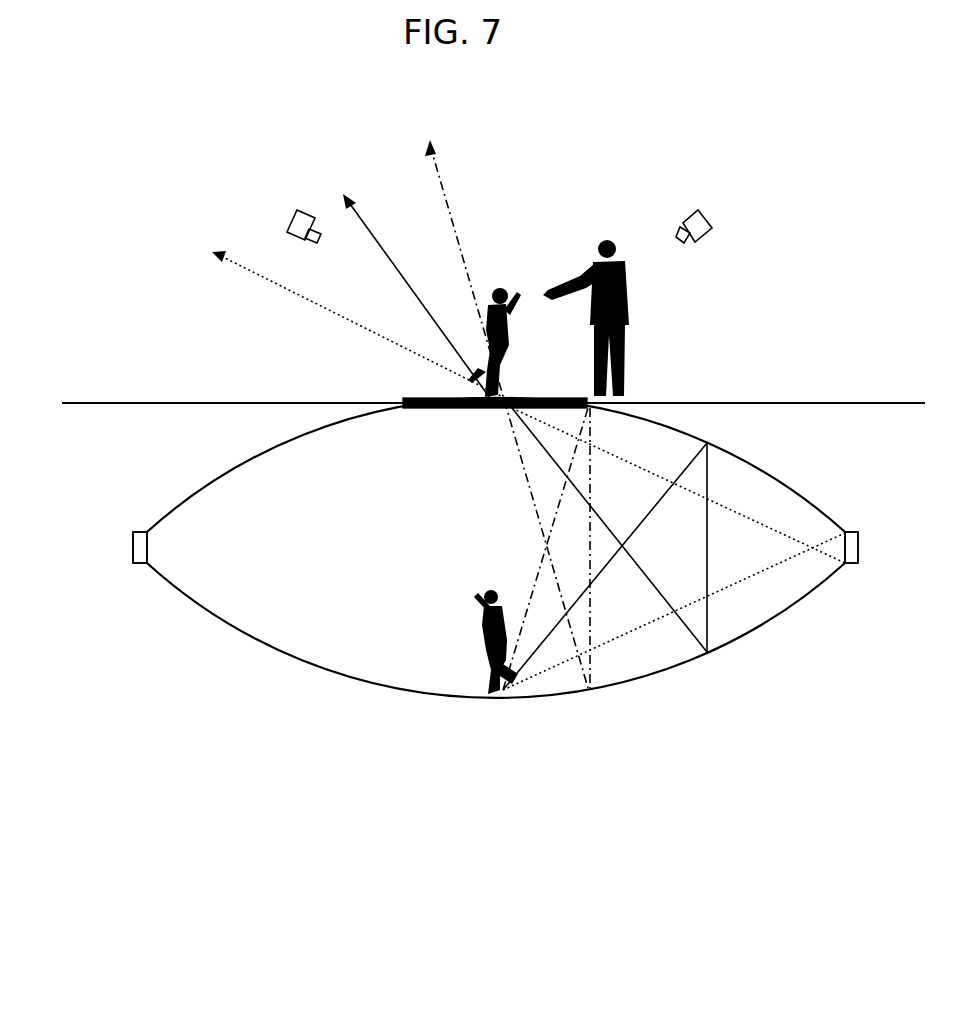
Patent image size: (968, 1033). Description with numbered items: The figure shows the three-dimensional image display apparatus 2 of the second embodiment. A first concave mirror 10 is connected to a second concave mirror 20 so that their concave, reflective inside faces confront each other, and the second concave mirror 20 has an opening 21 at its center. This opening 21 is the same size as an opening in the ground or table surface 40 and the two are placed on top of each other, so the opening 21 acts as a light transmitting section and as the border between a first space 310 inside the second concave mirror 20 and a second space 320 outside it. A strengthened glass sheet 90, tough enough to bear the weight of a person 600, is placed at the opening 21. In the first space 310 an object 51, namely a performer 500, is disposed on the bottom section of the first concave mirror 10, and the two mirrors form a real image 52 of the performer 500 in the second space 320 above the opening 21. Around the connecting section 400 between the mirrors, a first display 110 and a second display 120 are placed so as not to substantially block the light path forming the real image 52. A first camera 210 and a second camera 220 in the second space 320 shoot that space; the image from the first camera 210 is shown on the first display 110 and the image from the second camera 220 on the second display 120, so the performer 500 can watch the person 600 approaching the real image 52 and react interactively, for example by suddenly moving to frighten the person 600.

The three-dimensional image display apparatus 2 is at (64, 179).
The first concave mirror 10 is at (474, 574).
The second concave mirror 20 is at (160, 515).
The opening 21 is at (475, 437).
The strengthened glass sheet 90 is at (460, 409).
The ground or table surface 40 is at (878, 403).
The real image 52 is at (498, 285).
The object 51 is at (482, 648).
The performer 500 is at (456, 642).
The person 600 is at (600, 240).
The first display 110 is at (133, 562).
The second display 120 is at (858, 563).
The connecting section 400 is at (146, 586).
The first camera 210 is at (712, 222).
The second camera 220 is at (290, 220).
The first space 310 is at (310, 561).
The second space 320 is at (782, 335).